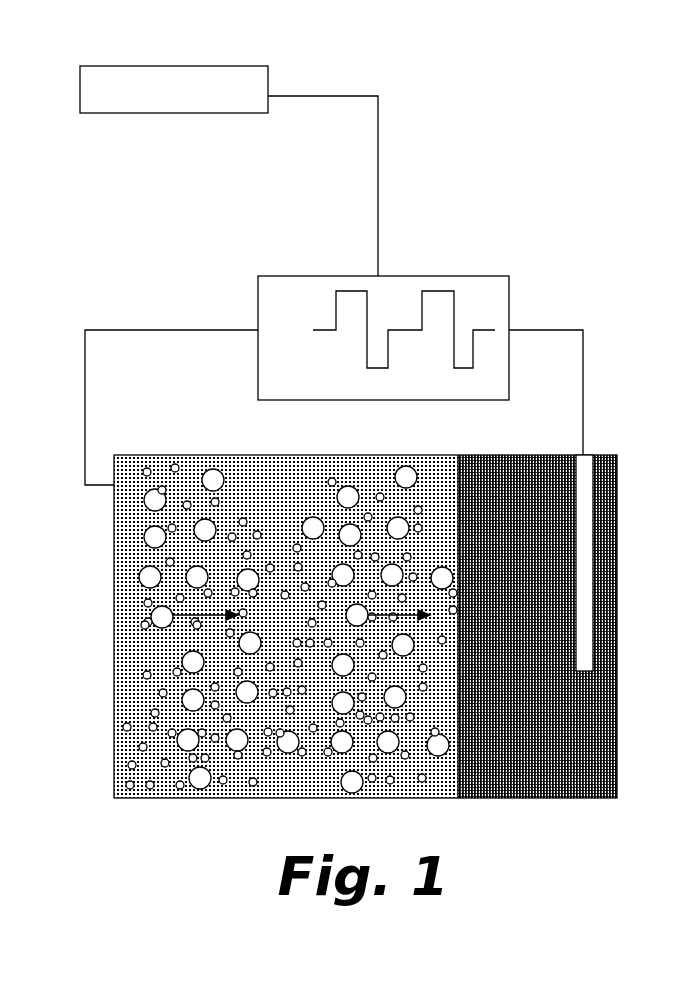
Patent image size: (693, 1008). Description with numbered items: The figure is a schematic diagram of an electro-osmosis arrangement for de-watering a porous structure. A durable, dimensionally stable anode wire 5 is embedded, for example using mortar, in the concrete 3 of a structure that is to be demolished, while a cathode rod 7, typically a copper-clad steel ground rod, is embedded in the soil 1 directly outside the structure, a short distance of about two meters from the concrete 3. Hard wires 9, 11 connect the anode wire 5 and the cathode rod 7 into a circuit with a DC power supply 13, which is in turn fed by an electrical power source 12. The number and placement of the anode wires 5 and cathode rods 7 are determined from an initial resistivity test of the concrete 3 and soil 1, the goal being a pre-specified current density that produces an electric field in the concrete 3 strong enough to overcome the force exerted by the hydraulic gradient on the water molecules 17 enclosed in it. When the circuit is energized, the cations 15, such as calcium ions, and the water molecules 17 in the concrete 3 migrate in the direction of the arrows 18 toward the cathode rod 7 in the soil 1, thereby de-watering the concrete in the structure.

The soil 1 is at (556, 742).
The concrete 3 is at (114, 724).
The durable, dimensionally stable anode wire 5 is at (133, 487).
The cathode rod 7 is at (583, 550).
The hard wire 9 is at (138, 330).
The hard wire 11 is at (583, 352).
The electrical power source 12 is at (268, 66).
The DC power supply 13 is at (509, 288).
The cations 15 is at (145, 680).
The water molecules 17 is at (150, 548).
The arrows 18 is at (158, 625).